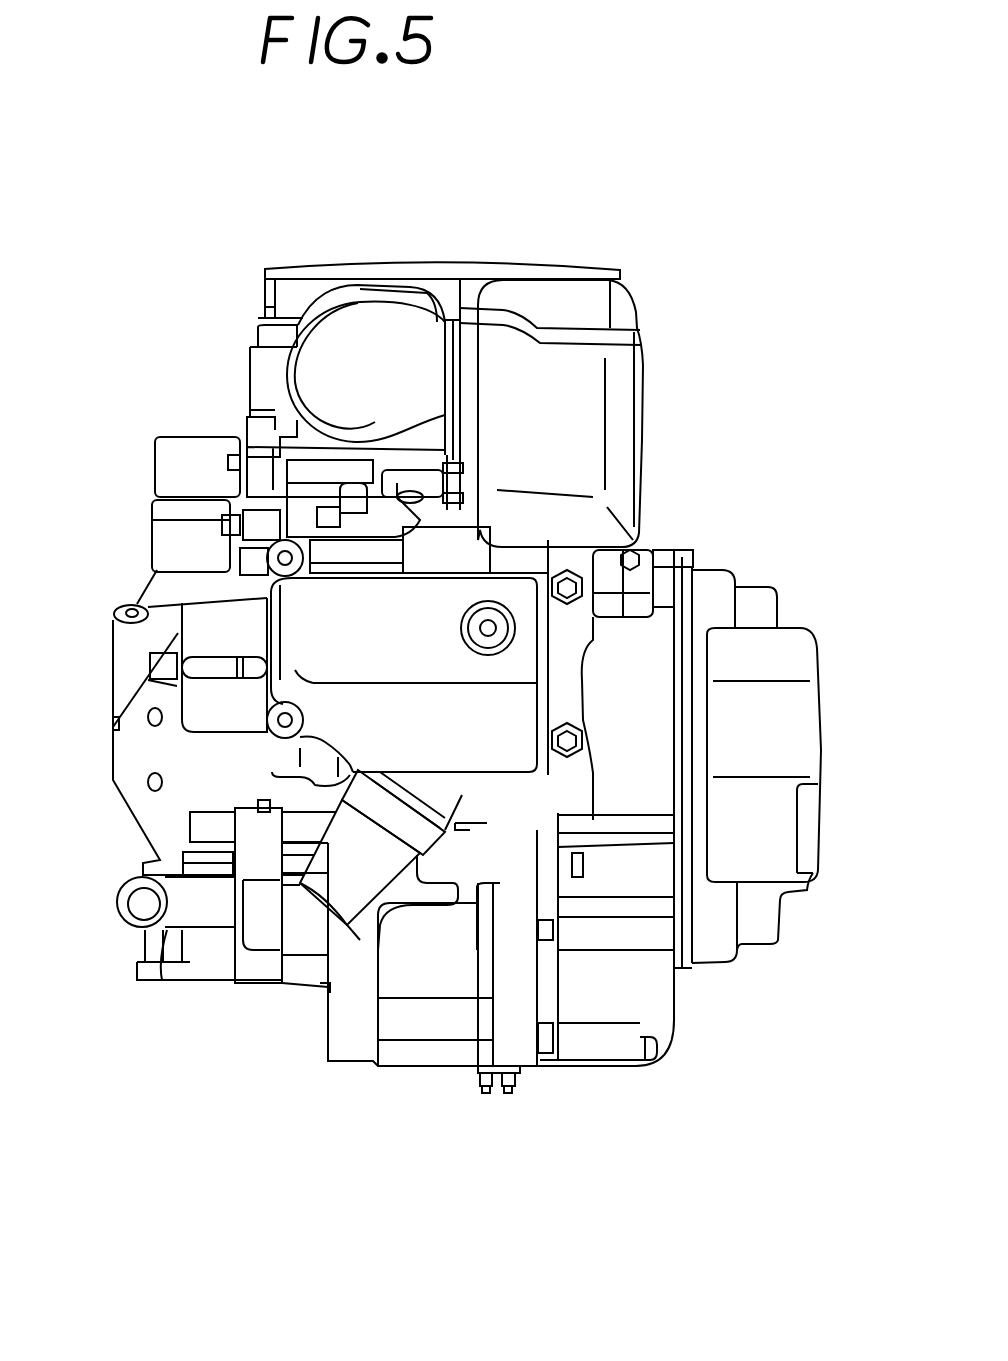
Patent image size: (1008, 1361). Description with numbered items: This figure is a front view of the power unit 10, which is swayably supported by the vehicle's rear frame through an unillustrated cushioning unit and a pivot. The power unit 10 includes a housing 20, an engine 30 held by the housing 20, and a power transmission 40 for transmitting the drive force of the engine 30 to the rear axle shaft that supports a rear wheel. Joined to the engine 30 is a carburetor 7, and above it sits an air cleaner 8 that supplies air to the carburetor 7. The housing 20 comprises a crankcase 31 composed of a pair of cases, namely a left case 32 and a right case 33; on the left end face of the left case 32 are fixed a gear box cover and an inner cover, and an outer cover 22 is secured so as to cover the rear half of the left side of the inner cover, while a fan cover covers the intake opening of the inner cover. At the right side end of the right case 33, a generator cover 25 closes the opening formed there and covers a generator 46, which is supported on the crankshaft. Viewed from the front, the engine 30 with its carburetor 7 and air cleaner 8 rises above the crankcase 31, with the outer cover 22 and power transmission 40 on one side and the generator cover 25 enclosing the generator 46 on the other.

The power unit 10 is at (281, 257).
The carburetor 7 is at (262, 383).
The air cleaner 8 is at (627, 398).
The housing 20 is at (721, 565).
The power transmission 40 is at (730, 718).
The outer cover 22 is at (822, 805).
The engine 30 is at (318, 633).
The generator 46 is at (140, 727).
The generator cover 25 is at (112, 768).
The crankcase 31 is at (583, 1203).
The left case 32 is at (423, 1067).
The right case 33 is at (583, 1067).